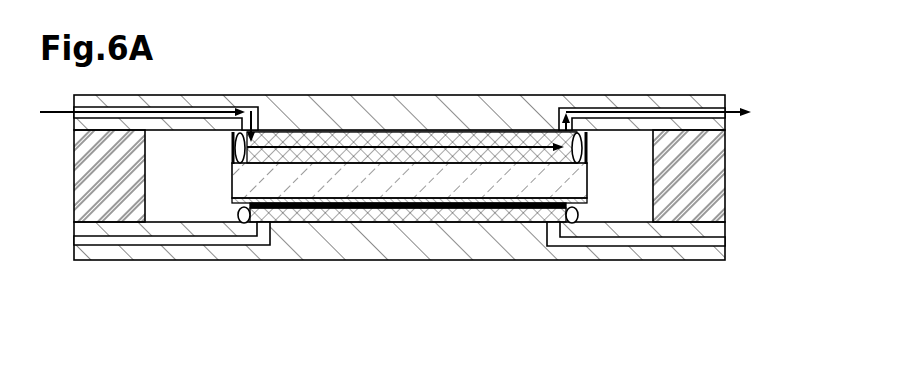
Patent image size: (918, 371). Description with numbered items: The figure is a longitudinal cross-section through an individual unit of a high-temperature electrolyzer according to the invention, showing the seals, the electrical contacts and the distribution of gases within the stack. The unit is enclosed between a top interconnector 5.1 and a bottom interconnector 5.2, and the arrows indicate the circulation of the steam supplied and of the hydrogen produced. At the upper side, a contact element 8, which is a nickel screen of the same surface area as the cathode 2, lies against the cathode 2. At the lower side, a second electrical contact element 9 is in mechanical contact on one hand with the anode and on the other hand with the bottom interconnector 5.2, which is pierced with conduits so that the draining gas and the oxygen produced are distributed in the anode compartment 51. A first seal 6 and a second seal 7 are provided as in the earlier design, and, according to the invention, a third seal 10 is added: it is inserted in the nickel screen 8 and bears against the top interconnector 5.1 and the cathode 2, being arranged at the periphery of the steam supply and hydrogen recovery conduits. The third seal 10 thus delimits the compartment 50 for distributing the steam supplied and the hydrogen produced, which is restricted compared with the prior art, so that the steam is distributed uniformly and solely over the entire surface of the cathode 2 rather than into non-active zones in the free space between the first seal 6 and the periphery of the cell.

The cathode 2 is at (481, 182).
The top interconnector 5.1 is at (305, 108).
The bottom interconnector 5.2 is at (523, 238).
The first seal 6 is at (116, 189).
The second seal 7 is at (579, 213).
The contact element (nickel screen) 8 is at (423, 137).
The second electrical contact element 9 is at (328, 220).
The third seal 10 is at (580, 147).
The compartment for distributing the steam supplied and the hydrogen produced 50 is at (483, 130).
The anode compartment 51 is at (458, 212).